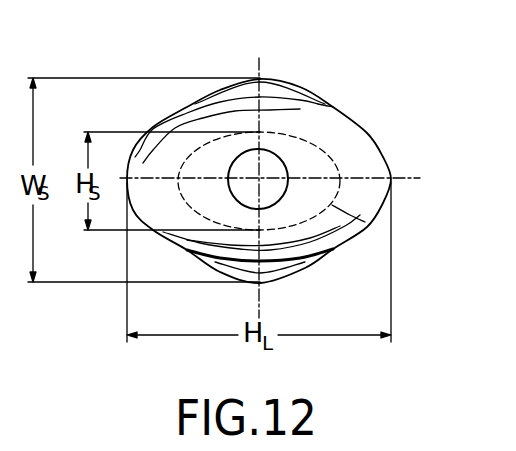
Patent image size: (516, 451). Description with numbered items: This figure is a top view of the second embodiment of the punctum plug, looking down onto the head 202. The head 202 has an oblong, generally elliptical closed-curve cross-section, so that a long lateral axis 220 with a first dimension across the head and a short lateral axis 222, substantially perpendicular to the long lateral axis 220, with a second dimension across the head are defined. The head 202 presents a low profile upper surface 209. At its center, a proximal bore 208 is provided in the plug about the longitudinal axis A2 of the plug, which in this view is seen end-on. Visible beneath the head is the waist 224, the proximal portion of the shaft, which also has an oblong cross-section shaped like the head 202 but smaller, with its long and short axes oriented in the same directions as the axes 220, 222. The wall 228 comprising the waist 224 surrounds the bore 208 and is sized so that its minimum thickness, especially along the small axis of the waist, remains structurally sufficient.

The head 202 is at (368, 132).
The proximal bore 208 is at (272, 168).
The low profile upper surface 209 is at (193, 233).
The long lateral axis 220 is at (408, 178).
The short lateral axis 222 is at (258, 77).
The waist 224 is at (368, 222).
The wall 228 is at (278, 216).
The longitudinal axis A2 is at (263, 170).